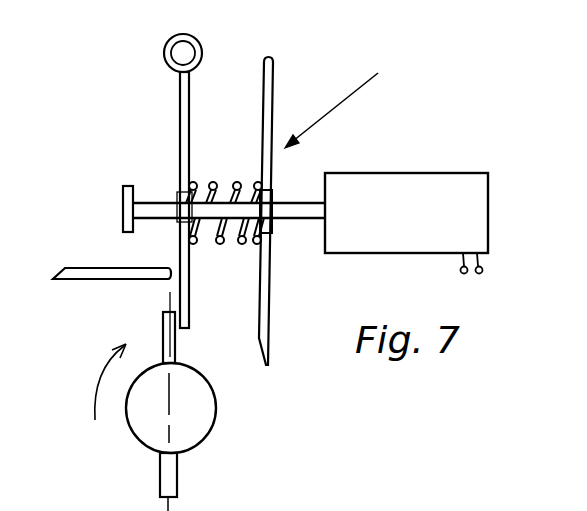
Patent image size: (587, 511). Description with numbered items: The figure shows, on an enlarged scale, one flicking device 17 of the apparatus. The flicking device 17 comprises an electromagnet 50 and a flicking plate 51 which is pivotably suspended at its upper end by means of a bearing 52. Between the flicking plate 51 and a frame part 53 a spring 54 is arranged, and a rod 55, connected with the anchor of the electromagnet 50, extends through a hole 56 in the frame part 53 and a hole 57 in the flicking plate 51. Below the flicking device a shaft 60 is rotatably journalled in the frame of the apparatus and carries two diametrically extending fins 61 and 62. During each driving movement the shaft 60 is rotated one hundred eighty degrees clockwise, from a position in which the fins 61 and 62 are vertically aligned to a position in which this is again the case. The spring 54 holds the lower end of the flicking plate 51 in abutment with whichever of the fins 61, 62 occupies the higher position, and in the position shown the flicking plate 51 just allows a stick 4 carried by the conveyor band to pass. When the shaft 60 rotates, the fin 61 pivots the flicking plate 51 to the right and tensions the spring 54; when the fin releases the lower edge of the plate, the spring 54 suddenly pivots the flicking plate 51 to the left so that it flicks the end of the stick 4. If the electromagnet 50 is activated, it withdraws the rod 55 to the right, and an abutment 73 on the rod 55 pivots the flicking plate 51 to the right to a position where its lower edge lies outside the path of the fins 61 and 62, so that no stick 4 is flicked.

The stick 4 is at (80, 275).
The flicking device 17 is at (344, 94).
The electromagnet 50 is at (357, 190).
The flicking plate 51 is at (180, 126).
The bearing 52 is at (193, 58).
The frame part 53 is at (272, 108).
The spring 54 is at (214, 182).
The rod 55 is at (301, 219).
The hole 56 is at (279, 195).
The hole 57 is at (178, 193).
The shaft 60 is at (211, 406).
The fin 61 is at (162, 335).
The fin 62 is at (177, 471).
The abutment 73 is at (122, 212).